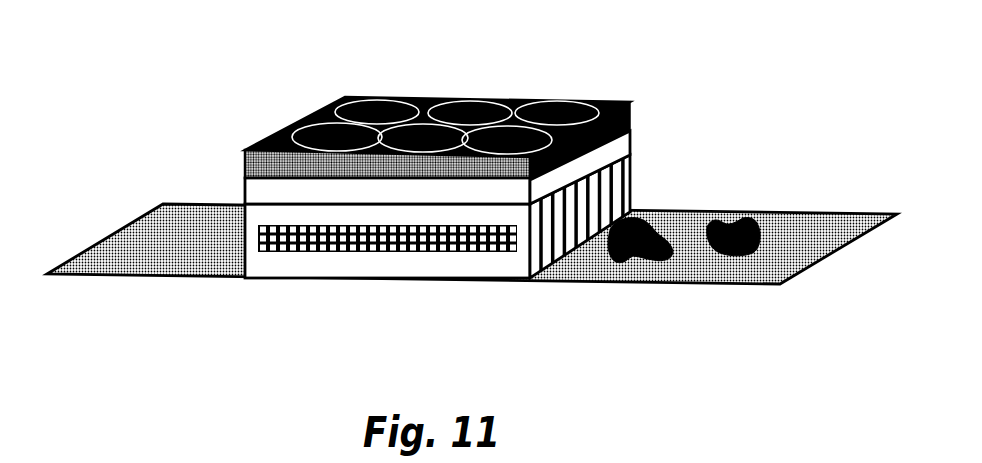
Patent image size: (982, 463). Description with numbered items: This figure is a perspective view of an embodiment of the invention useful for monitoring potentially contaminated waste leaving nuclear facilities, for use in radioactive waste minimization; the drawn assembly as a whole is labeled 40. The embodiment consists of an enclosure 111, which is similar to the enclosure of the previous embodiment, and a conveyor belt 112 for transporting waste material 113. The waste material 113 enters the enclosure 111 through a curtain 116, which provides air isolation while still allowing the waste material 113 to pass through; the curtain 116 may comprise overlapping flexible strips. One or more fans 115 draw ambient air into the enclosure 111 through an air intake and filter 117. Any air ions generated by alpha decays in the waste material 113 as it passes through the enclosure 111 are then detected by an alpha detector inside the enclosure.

The sensor device 40 is at (397, 128).
The enclosure 111 is at (272, 265).
The conveyor belt 112 is at (632, 273).
The waste material 113 is at (652, 230).
The fans 115 is at (465, 95).
The curtain 116 is at (629, 179).
The air intake and filter 117 is at (427, 253).